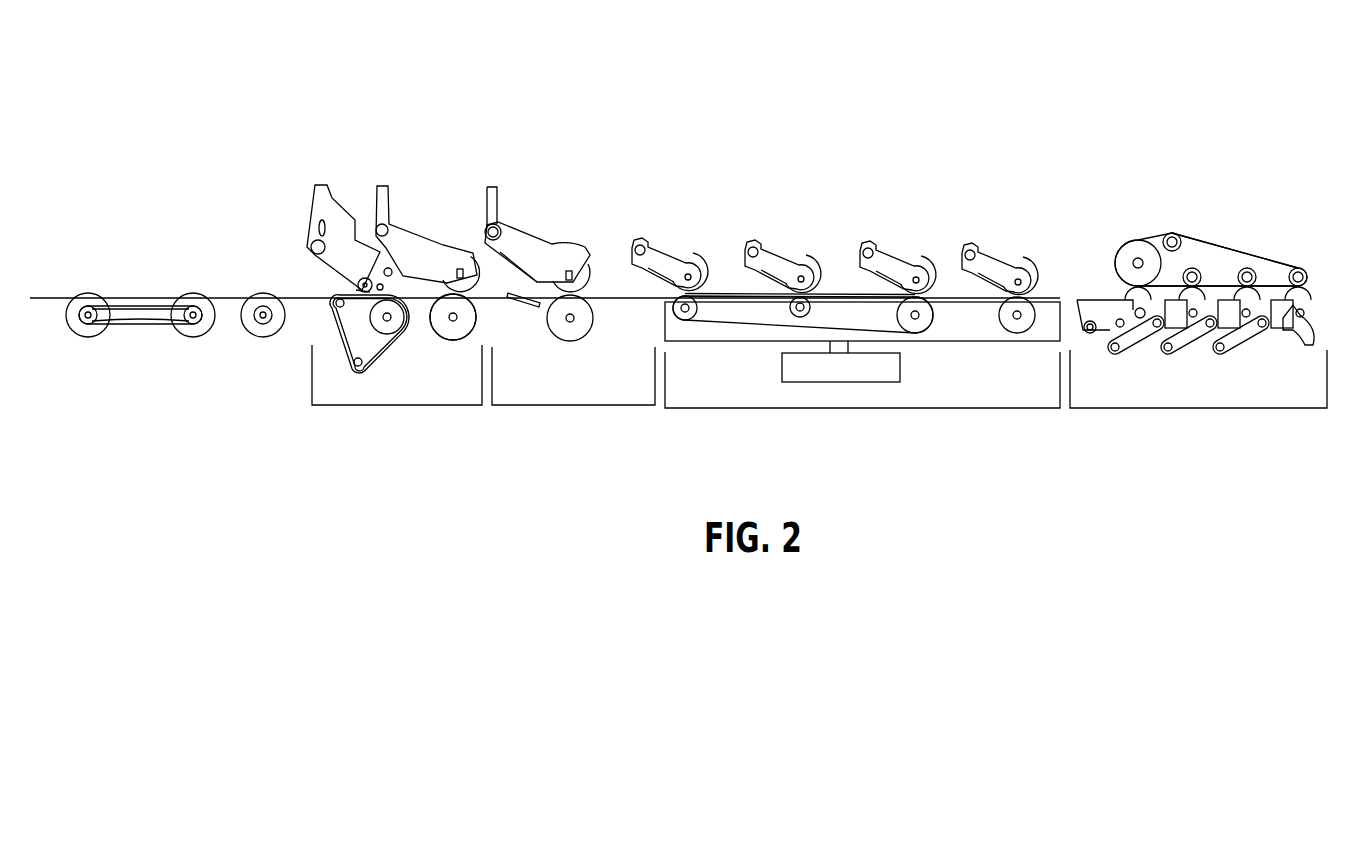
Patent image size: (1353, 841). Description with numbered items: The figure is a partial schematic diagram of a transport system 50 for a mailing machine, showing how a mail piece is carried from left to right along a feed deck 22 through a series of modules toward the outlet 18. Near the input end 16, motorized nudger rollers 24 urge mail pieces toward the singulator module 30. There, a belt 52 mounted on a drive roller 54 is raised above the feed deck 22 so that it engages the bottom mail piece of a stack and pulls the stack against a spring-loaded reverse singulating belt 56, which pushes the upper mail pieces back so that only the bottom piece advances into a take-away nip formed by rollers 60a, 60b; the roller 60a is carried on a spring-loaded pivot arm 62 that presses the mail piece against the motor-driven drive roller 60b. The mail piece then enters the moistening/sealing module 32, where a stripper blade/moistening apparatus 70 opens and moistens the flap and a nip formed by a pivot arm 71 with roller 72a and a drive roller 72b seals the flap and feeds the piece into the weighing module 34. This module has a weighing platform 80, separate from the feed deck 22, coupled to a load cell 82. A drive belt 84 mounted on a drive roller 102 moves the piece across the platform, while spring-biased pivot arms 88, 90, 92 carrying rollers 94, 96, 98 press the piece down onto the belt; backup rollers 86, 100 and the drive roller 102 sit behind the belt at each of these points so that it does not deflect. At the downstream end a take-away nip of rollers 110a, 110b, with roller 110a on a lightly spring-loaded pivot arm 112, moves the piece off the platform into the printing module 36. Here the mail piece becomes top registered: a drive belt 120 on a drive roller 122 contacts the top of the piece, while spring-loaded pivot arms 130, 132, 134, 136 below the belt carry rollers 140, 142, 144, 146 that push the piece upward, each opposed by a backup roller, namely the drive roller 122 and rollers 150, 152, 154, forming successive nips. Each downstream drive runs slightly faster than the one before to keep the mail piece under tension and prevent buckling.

The input end 16 is at (58, 306).
The outfeed transport 18 is at (1322, 262).
The feed deck 22 is at (280, 297).
The nudger rollers 24 is at (113, 290).
The singulator module 30 is at (380, 408).
The moistening/sealing module 32 is at (542, 408).
The weighing module 34 is at (832, 408).
The printing module 36 is at (1170, 408).
The transport system 50 is at (728, 137).
The belt 52 is at (320, 308).
The drive roller 54 is at (388, 330).
The reverse singulating belt 56 is at (422, 297).
The roller 60a is at (474, 255).
The drive roller 60b is at (456, 341).
The pivot arm 62 is at (415, 235).
The stripper blade/moistening apparatus 70 is at (524, 300).
The pivot arm 71 is at (545, 248).
The roller 72a is at (588, 262).
The drive roller 72b is at (590, 335).
The weighing platform 80 is at (946, 302).
The load cell 82 is at (847, 382).
The drive belt 84 is at (750, 330).
The backup roller 86 is at (692, 320).
The pivot arm 88 is at (668, 262).
The pivot arm 90 is at (780, 262).
The pivot arm 92 is at (882, 262).
The roller 94 is at (702, 278).
The roller 96 is at (815, 283).
The roller 98 is at (920, 288).
The backup roller 100 is at (800, 317).
The drive roller 102 is at (918, 333).
The take-away roller 110a is at (1033, 284).
The take-away drive roller 110b is at (1018, 333).
The pivot arm 112 is at (990, 262).
The drive belt 120 is at (1247, 268).
The drive roller 122 is at (1150, 252).
The pivot arm 130 is at (1095, 337).
The pivot arm 132 is at (1135, 350).
The pivot arm 134 is at (1188, 350).
The pivot arm 136 is at (1245, 345).
The roller 140 is at (1112, 300).
The roller 142 is at (1192, 268).
The roller 144 is at (1270, 284).
The roller 146 is at (1312, 336).
The backup roller 150 is at (1172, 233).
The backup roller 152 is at (1230, 262).
The backup roller 154 is at (1292, 268).